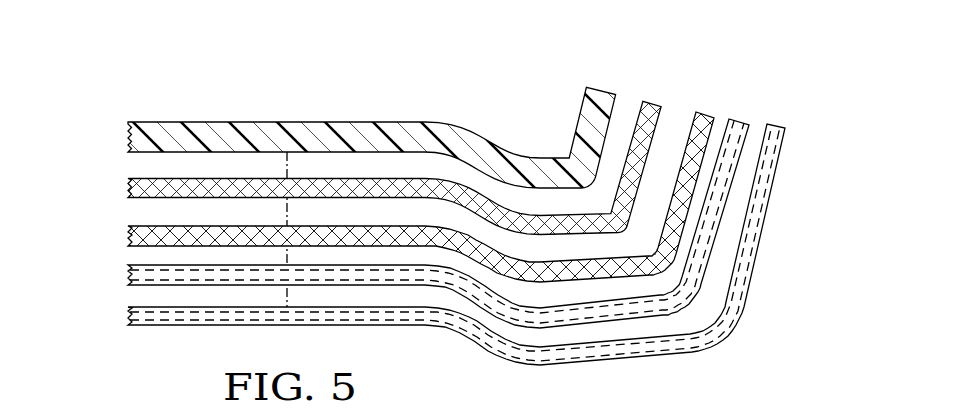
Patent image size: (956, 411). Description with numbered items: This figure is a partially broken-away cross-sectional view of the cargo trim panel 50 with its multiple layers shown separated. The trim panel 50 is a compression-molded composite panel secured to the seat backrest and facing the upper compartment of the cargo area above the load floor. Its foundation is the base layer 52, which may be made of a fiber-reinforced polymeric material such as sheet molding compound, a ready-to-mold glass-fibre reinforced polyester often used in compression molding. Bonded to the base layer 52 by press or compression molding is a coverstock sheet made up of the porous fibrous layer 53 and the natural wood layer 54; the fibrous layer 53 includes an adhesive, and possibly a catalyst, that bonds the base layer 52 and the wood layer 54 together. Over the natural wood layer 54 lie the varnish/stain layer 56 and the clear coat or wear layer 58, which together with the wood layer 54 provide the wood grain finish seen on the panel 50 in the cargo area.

The cargo trim panel 50 is at (90, 196).
The base layer 52 is at (601, 88).
The porous fibrous layer 53 is at (654, 103).
The natural wood layer 54 is at (706, 114).
The varnish/stain layer 56 is at (742, 121).
The clear coat or wear layer 58 is at (778, 126).